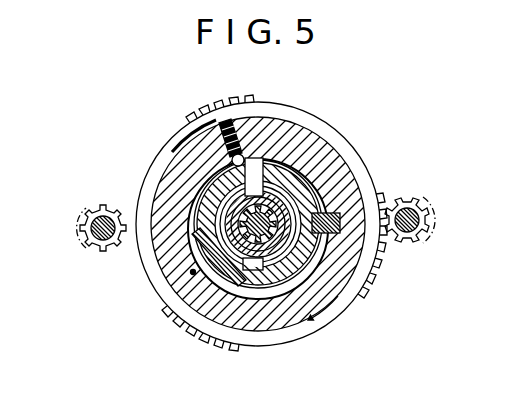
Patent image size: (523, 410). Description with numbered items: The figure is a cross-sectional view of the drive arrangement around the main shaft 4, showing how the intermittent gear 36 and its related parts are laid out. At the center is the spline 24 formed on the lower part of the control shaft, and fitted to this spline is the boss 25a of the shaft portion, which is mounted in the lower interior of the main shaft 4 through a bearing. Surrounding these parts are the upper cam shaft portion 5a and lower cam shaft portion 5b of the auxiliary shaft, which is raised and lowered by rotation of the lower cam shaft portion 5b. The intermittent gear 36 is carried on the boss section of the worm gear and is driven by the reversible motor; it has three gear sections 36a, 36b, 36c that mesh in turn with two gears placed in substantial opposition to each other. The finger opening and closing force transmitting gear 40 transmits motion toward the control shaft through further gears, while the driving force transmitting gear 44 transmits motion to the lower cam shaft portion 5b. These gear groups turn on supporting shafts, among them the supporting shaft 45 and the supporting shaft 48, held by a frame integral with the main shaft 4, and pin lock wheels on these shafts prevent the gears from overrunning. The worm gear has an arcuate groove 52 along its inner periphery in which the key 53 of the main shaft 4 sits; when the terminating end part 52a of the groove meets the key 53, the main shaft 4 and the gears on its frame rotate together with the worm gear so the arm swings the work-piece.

The main shaft 4 is at (205, 207).
The upper cam shaft portion 5a is at (216, 198).
The lower cam shaft portion 5b is at (312, 272).
The spline 24 is at (258, 240).
The boss 25a is at (277, 178).
The intermittent gear 36 is at (172, 303).
The gear section 36a is at (382, 264).
The gear section 36b is at (216, 99).
The gear section 36c is at (201, 342).
The finger opening and closing force transmitting gear 40 is at (113, 250).
The driving force transmitting gear 44 is at (393, 207).
The supporting shaft 45 is at (102, 218).
The supporting shaft 48 is at (420, 225).
The arcuate groove 52 is at (278, 293).
The terminating end part 52a is at (192, 272).
The key 53 is at (337, 235).